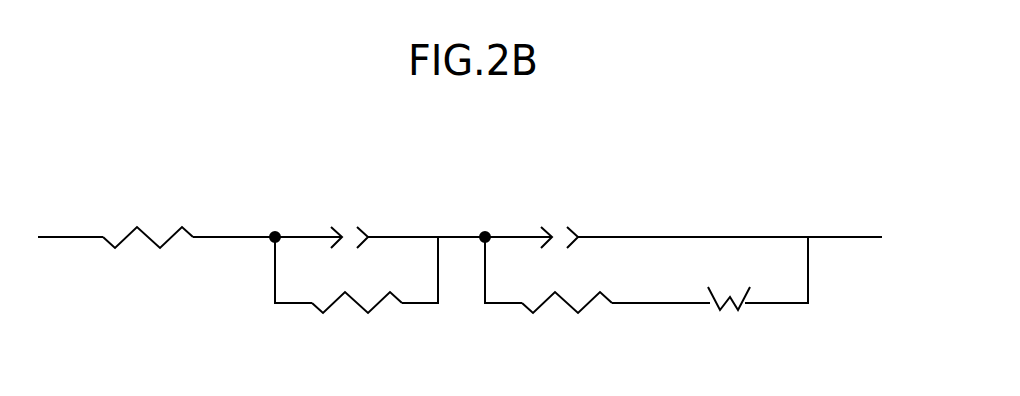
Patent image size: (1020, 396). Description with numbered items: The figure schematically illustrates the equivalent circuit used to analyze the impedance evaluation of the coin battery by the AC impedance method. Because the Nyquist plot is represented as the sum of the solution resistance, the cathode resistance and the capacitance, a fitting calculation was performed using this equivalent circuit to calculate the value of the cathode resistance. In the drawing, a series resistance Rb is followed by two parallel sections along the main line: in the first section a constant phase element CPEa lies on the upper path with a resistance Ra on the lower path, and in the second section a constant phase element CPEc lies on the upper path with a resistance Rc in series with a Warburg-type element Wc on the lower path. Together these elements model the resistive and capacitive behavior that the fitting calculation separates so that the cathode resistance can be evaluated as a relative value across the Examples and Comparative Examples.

The bulk resistance Rb is at (148, 221).
The constant phase element a CPEa is at (347, 220).
The resistance a Ra is at (357, 285).
The constant phase element c CPEc is at (557, 220).
The resistance c Rc is at (567, 285).
The Warburg impedance c Wc is at (735, 295).